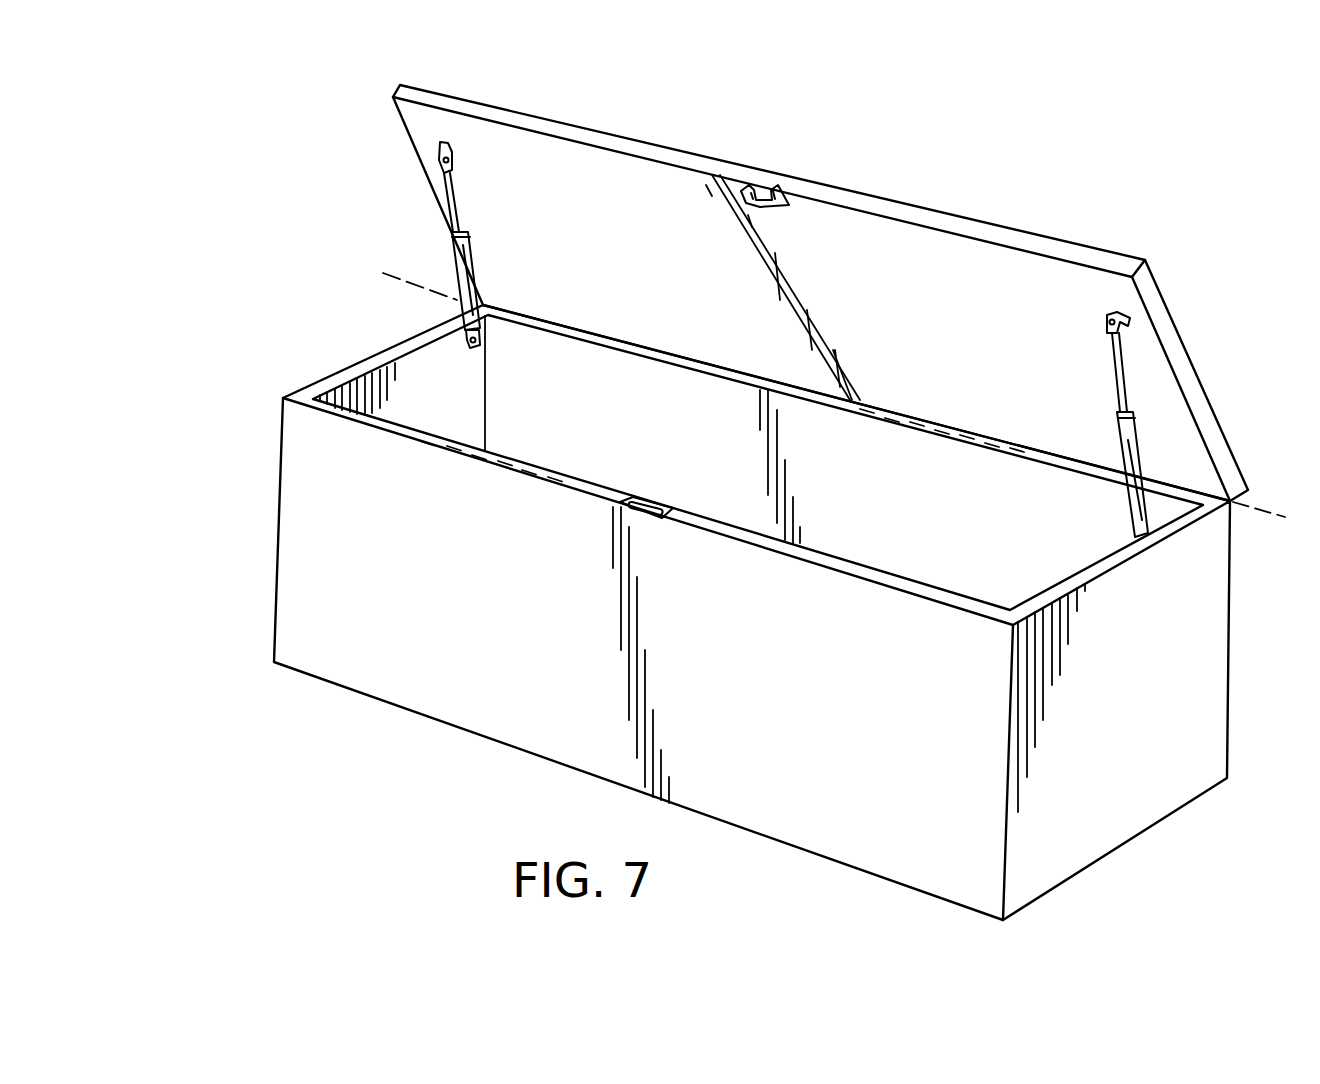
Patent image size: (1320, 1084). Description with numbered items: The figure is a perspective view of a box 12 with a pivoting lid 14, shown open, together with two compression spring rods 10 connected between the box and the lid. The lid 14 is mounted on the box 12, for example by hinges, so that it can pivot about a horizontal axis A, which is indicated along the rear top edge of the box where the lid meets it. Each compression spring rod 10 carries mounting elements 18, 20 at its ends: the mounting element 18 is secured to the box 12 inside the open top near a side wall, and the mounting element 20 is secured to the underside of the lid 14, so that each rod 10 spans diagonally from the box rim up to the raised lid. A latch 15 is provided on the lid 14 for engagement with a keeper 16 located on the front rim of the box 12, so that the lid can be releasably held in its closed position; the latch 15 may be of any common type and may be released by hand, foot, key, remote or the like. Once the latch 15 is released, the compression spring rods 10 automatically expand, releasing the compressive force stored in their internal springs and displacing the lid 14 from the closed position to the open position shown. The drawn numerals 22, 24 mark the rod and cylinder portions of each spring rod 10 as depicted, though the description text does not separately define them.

The compression spring rod 10 is at (805, 350).
The box 12 is at (298, 543).
The lid 14 is at (907, 208).
The latch 15 is at (775, 208).
The keeper 16 is at (650, 500).
The mounting element 18 is at (466, 350).
The mounting element 20 is at (460, 152).
The piston rod 22 is at (446, 191).
The cylinder 24 is at (457, 304).
The axis A is at (383, 275).